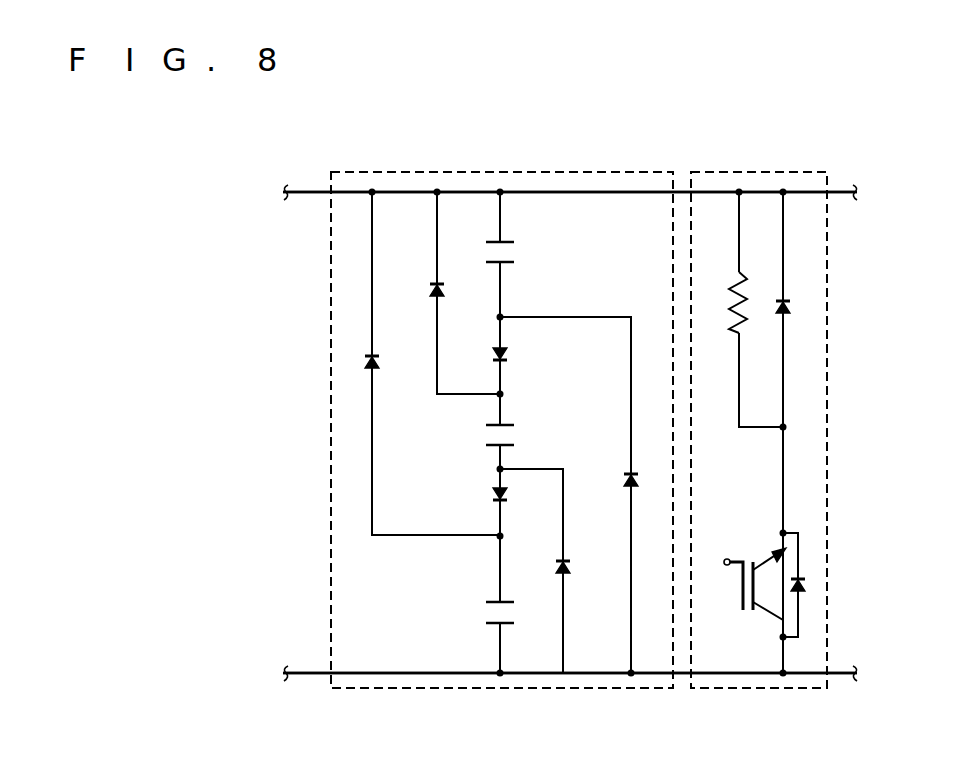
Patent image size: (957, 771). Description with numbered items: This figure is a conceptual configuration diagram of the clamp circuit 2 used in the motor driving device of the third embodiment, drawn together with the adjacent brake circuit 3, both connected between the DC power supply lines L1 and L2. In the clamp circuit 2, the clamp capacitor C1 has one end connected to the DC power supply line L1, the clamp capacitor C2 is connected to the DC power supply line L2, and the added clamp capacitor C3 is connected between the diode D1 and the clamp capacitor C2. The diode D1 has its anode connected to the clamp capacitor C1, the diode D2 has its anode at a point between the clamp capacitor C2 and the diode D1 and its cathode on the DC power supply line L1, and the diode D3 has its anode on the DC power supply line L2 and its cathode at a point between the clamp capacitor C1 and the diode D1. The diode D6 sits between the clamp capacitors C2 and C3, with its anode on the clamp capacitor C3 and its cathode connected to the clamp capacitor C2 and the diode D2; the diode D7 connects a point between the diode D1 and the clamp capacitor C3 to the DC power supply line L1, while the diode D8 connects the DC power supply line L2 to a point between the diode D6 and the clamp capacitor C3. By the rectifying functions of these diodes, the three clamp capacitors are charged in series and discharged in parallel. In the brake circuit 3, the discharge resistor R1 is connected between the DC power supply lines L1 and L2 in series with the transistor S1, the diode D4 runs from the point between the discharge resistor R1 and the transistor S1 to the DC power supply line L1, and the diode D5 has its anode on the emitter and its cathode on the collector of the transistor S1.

The clamp circuit 2 is at (439, 172).
The brake circuit 3 is at (783, 172).
The DC power supply line L1 is at (684, 190).
The DC power supply line L2 is at (678, 676).
The clamp capacitor C1 is at (516, 247).
The clamp capacitor C2 is at (484, 610).
The clamp capacitor C3 is at (516, 437).
The diode D1 is at (508, 351).
The diode D2 is at (362, 371).
The diode D3 is at (623, 488).
The diode D4 is at (792, 308).
The diode D5 is at (807, 584).
The diode D6 is at (492, 497).
The diode D7 is at (428, 299).
The diode D8 is at (571, 572).
The discharge resistor R1 is at (728, 316).
The transistor S1 is at (755, 579).